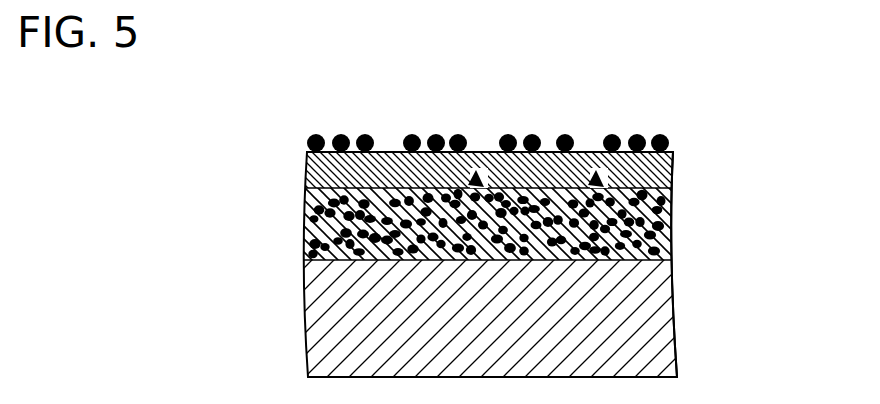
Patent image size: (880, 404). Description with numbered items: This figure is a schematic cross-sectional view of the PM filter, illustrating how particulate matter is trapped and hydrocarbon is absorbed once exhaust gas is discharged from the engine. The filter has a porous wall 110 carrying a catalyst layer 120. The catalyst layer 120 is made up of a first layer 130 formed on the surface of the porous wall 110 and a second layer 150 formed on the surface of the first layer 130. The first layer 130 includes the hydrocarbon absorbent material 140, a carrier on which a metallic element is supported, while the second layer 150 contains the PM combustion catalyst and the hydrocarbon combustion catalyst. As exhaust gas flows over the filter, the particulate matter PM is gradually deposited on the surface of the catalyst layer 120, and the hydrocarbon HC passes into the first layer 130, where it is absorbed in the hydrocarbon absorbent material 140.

The porous wall 110 is at (276, 314).
The catalyst layer 120 is at (396, 198).
The first layer 130 is at (272, 216).
The hydrocarbon absorbent material 140 is at (671, 233).
The second layer 150 is at (272, 168).
The particulate matter PM is at (311, 139).
The hydrocarbon HC is at (478, 172).